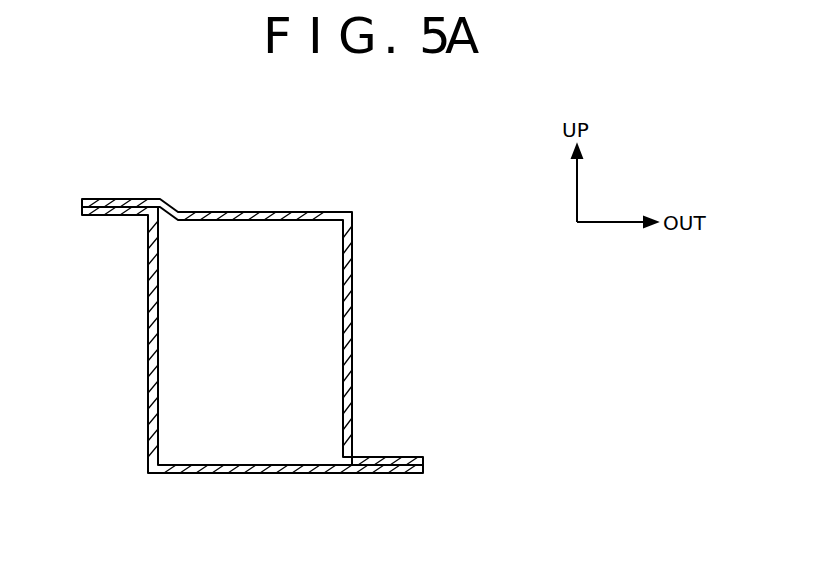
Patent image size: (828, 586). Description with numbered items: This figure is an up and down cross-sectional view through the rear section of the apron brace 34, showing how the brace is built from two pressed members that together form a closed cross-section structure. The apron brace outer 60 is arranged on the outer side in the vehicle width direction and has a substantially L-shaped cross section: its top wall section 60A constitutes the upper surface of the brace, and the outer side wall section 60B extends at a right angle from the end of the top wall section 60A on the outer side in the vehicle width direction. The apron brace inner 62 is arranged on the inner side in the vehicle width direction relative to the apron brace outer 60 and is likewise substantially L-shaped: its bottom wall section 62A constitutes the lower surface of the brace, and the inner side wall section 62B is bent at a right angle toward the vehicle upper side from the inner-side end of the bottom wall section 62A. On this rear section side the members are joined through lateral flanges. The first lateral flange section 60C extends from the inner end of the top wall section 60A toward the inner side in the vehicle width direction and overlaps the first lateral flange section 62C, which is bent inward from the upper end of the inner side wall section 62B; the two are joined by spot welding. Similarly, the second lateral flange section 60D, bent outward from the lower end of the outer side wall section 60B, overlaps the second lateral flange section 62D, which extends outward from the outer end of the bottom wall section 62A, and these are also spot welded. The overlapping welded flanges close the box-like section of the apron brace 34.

The apron brace 34 is at (300, 185).
The apron brace outer 60 is at (338, 208).
The top wall section 60A is at (238, 211).
The outer side wall section 60B is at (352, 326).
The first lateral flange section 60C is at (118, 198).
The second lateral flange section 60D is at (400, 455).
The apron brace inner 62 is at (148, 447).
The bottom wall section 62A is at (245, 476).
The inner side wall section 62B is at (148, 355).
The first lateral flange section 62C is at (108, 215).
The second lateral flange section 62D is at (395, 476).